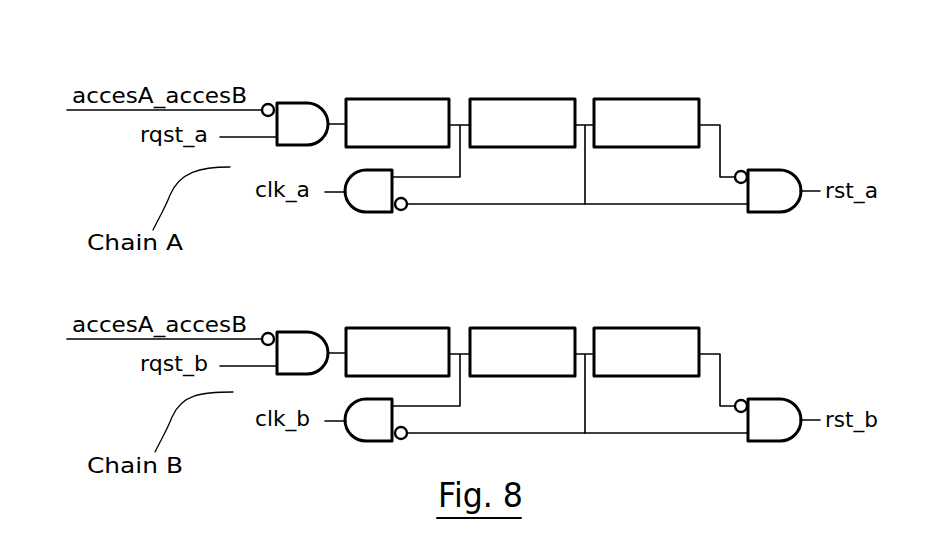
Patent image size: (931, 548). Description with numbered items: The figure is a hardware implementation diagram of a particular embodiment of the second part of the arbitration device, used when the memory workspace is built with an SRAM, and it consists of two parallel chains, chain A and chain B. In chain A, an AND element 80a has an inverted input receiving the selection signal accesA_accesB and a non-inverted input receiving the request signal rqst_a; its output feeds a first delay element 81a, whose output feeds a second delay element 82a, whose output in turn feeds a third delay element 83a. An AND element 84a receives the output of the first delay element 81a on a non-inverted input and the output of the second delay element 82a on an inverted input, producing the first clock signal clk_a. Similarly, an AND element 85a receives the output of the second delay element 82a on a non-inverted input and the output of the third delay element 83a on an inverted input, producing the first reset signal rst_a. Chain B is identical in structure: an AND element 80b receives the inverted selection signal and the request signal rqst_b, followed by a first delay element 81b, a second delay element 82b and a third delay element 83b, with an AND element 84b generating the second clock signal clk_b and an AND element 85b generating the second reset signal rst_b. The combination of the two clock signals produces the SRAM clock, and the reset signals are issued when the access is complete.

The AND element 80a is at (293, 103).
The first delay element 81a is at (402, 98).
The second delay element 82a is at (520, 98).
The third delay element 83a is at (658, 98).
The AND element 84a is at (388, 185).
The AND element 85a is at (765, 170).
The AND element 80b is at (330, 312).
The first delay element 81b is at (427, 313).
The second delay element 82b is at (549, 313).
The third delay element 83b is at (678, 313).
The AND element 84b is at (448, 416).
The AND element 85b is at (804, 380).